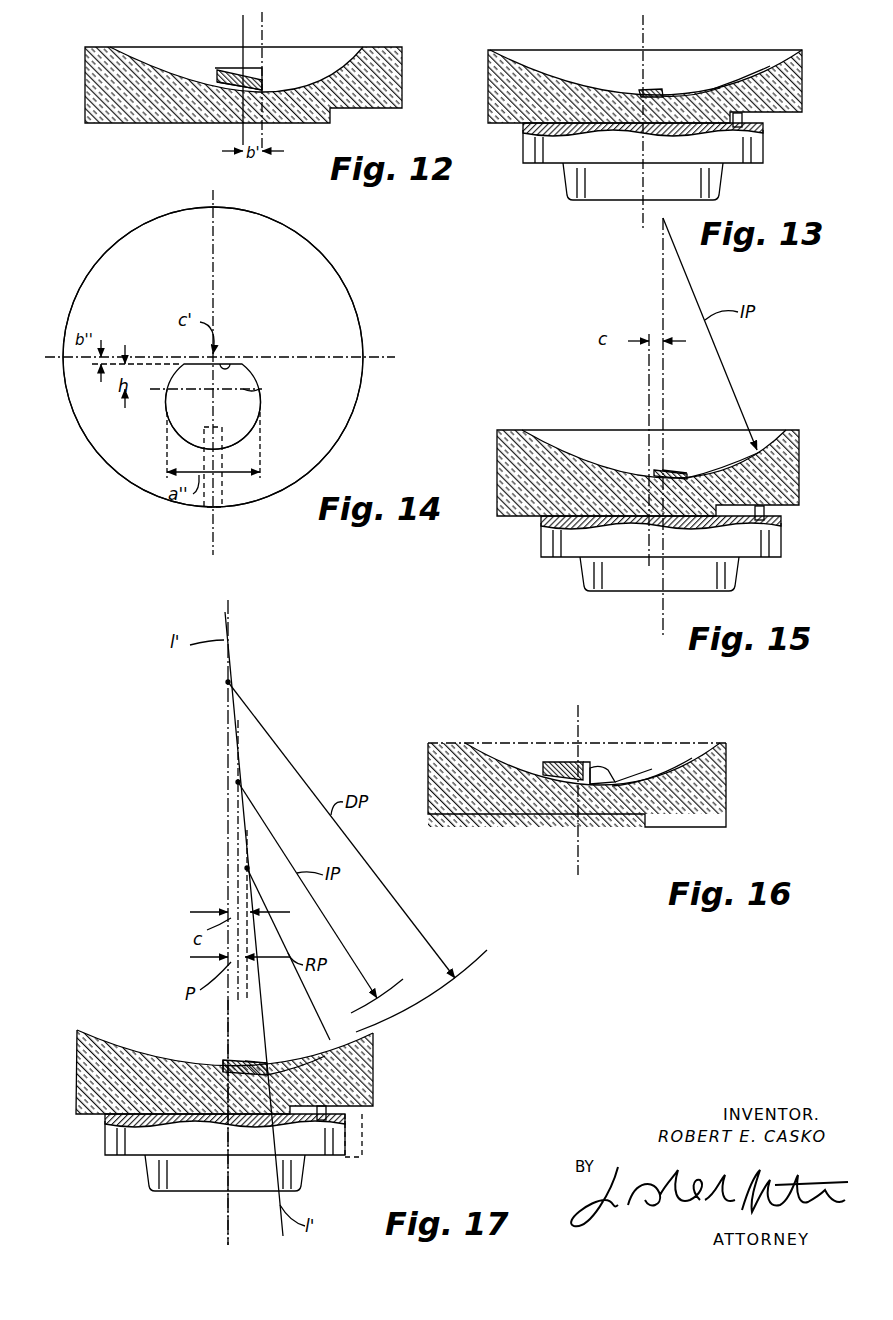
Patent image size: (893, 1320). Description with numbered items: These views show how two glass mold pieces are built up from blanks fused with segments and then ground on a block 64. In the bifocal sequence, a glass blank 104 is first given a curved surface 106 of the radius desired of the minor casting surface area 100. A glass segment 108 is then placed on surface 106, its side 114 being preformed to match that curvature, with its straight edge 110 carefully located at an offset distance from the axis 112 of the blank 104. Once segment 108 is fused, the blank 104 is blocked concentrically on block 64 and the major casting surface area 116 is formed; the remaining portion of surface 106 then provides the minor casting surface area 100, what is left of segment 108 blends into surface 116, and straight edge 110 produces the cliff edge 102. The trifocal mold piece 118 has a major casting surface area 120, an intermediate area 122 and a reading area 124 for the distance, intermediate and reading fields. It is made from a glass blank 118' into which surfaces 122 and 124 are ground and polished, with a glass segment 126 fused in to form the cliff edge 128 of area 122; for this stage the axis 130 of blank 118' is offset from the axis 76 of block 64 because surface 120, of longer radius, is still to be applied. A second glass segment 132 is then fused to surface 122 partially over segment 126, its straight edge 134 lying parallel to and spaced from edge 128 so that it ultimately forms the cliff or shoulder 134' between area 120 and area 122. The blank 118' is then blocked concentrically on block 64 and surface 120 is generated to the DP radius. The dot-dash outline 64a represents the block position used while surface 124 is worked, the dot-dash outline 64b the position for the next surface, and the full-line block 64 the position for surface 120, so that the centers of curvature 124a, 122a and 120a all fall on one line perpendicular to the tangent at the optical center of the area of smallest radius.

In FIG. 13, the block 64 is at (551, 158).
In FIG. 15, the block 64 is at (762, 561).
In FIG. 17, the block 64 is at (128, 1152).
In FIG. 17, the dot-dash outline of block 64a is at (366, 1125).
In FIG. 17, the dot-dash outline of block 64b is at (364, 1157).
In FIG. 15, the axis of block 76 is at (665, 367).
In FIG. 17, the axis of block 76 is at (229, 633).
In FIG. 13, the minor casting surface area 100 is at (716, 90).
In FIG. 13, the cliff edge 102 is at (667, 93).
In FIG. 12, the glass blank 104 is at (84, 97).
In FIG. 13, the glass blank 104 is at (486, 86).
In FIG. 12, the curved surface 106 is at (184, 55).
In FIG. 12, the glass segment 108 is at (222, 68).
In FIG. 13, the glass segment 108 is at (645, 90).
In FIG. 12, the straight edge 110 is at (262, 84).
In FIG. 12, the axis of blank 112 is at (245, 34).
In FIG. 12, the side of segment 114 is at (225, 88).
In FIG. 13, the major casting surface area 116 is at (528, 64).
In FIG. 14, the mold piece 118 is at (199, 356).
In FIG. 15, the glass blank 118' is at (608, 471).
In FIG. 16, the glass blank 118' is at (537, 770).
In FIG. 17, the glass blank 118' is at (207, 1075).
In FIG. 14, the major casting surface area 120 is at (340, 318).
In FIG. 17, the major casting surface area 120 is at (135, 1046).
In FIG. 17, the center of curvature of surface 120 120a is at (226, 682).
In FIG. 14, the intermediate casting surface area 122 is at (255, 379).
In FIG. 15, the intermediate casting surface area 122 is at (770, 440).
In FIG. 16, the intermediate casting surface area 122 is at (487, 752).
In FIG. 17, the intermediate casting surface area 122 is at (252, 1060).
In FIG. 17, the center of curvature of surface 122 122a is at (236, 782).
In FIG. 14, the reading casting surface area 124 is at (176, 418).
In FIG. 15, the reading casting surface area 124 is at (716, 466).
In FIG. 16, the reading casting surface area 124 is at (652, 768).
In FIG. 17, the reading casting surface area 124 is at (288, 1068).
In FIG. 17, the center of curvature of surface 124 124a is at (245, 868).
In FIG. 15, the glass segment 126 is at (657, 472).
In FIG. 16, the glass segment 126 is at (598, 776).
In FIG. 14, the cliff edge 128 is at (259, 390).
In FIG. 15, the cliff edge 128 is at (680, 471).
In FIG. 16, the cliff edge 128 is at (618, 779).
In FIG. 17, the cliff edge 128 is at (268, 1066).
In FIG. 15, the axis of blank 130 is at (648, 385).
In FIG. 16, the axis of blank 130 is at (576, 840).
In FIG. 17, the axis of blank 130 is at (228, 1205).
In FIG. 16, the second glass segment 132 is at (548, 766).
In FIG. 16, the straight edge of segment 132 134 is at (571, 735).
In FIG. 17, the straight edge of segment 132 134 is at (211, 1044).
In FIG. 14, the cliff or shoulder 134' is at (248, 347).